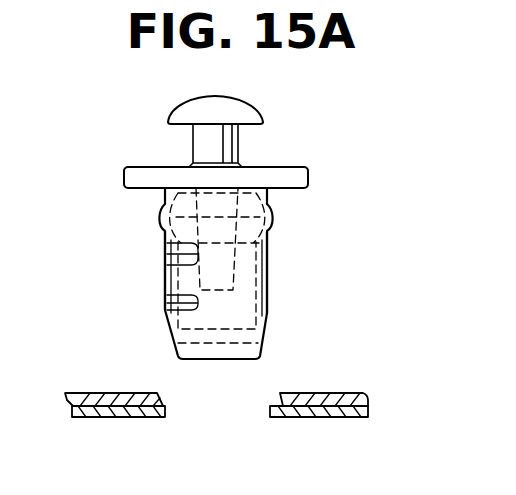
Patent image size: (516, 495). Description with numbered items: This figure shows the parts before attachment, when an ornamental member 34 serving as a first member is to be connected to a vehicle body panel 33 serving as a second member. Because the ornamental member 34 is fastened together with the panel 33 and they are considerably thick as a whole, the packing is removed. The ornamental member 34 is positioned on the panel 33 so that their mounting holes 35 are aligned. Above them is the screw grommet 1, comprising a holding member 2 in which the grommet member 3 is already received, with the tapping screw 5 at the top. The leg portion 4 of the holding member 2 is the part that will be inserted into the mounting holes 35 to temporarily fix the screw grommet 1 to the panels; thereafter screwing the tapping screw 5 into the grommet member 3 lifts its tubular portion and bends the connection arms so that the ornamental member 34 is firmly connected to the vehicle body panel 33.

The screw grommet 1 is at (282, 253).
The holding member 2 is at (125, 170).
The grommet member 3 is at (183, 279).
The leg portion 4 is at (265, 285).
The tapping screw 5 is at (240, 112).
The vehicle body panel 33 is at (118, 417).
The ornamental member 34 is at (98, 402).
The mounting holes 35 is at (252, 408).